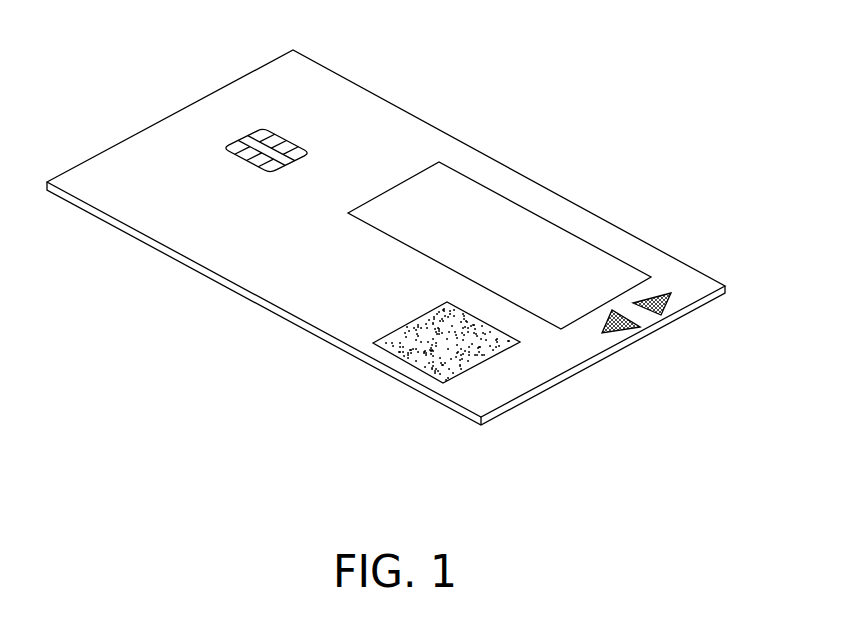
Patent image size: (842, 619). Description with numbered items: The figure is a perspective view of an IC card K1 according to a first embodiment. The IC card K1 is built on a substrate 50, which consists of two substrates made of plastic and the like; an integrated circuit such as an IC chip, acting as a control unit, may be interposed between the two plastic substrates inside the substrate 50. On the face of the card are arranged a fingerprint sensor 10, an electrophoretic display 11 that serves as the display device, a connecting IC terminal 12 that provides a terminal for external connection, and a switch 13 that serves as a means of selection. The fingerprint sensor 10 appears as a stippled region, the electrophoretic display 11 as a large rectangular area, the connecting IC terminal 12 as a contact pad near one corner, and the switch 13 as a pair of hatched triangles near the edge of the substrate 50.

The IC card K1 is at (535, 135).
The fingerprint sensor 10 is at (473, 348).
The electrophoretic display 11 is at (593, 258).
The connecting IC terminal 12 is at (261, 128).
The switch 13 is at (662, 307).
The substrate 50 is at (312, 332).